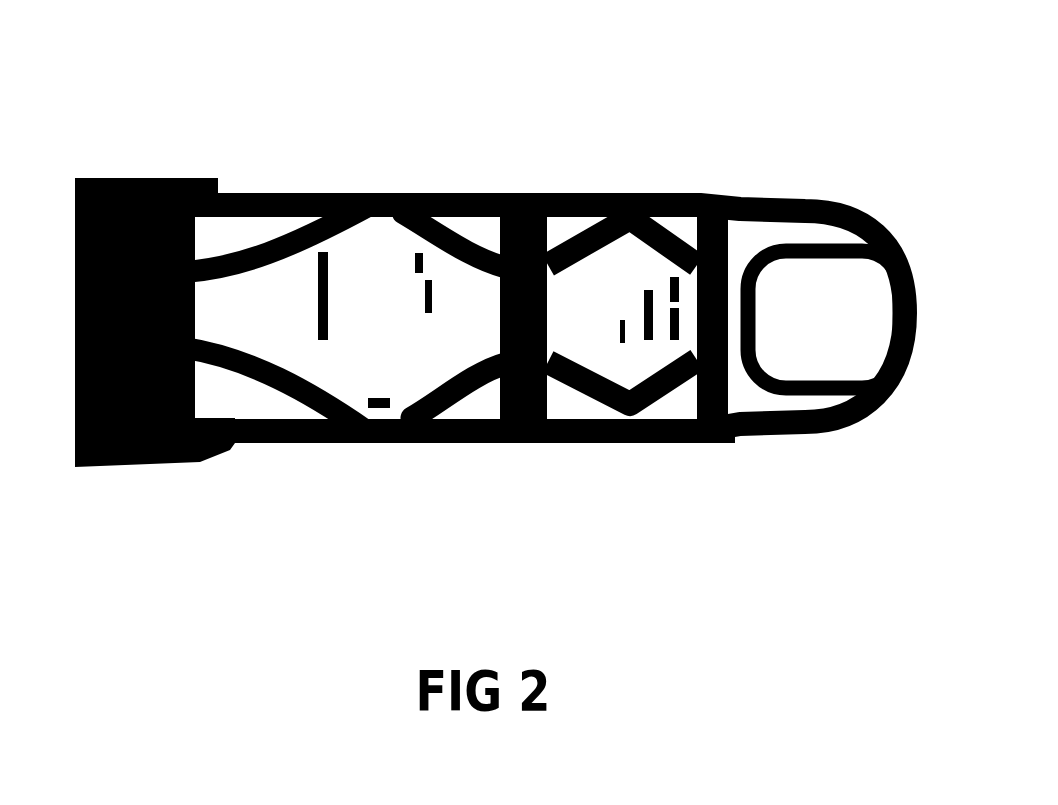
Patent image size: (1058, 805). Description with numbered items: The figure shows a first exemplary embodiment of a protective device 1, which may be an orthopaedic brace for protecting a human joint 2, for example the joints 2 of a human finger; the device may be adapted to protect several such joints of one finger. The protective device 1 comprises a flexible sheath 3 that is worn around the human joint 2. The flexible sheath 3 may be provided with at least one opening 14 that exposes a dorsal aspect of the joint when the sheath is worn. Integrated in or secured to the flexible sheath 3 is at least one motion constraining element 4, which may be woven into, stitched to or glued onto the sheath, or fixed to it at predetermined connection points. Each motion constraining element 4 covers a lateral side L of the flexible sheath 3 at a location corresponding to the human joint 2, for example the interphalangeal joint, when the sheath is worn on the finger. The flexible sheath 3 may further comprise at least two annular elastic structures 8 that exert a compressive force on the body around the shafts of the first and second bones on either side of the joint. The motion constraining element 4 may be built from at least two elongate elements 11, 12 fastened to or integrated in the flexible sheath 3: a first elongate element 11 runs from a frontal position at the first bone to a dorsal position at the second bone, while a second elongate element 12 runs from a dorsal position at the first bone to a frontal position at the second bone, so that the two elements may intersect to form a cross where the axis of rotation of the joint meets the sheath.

The protective device 1 is at (170, 120).
The human joint 2 is at (637, 193).
The flexible sheath 3 is at (83, 513).
The motion constraining element 4 is at (260, 62).
The annular elastic structure 8 is at (545, 430).
The first elongate element 11 is at (267, 243).
The second elongate element 12 is at (463, 243).
The opening 14 is at (394, 329).
The lateral side L is at (792, 182).